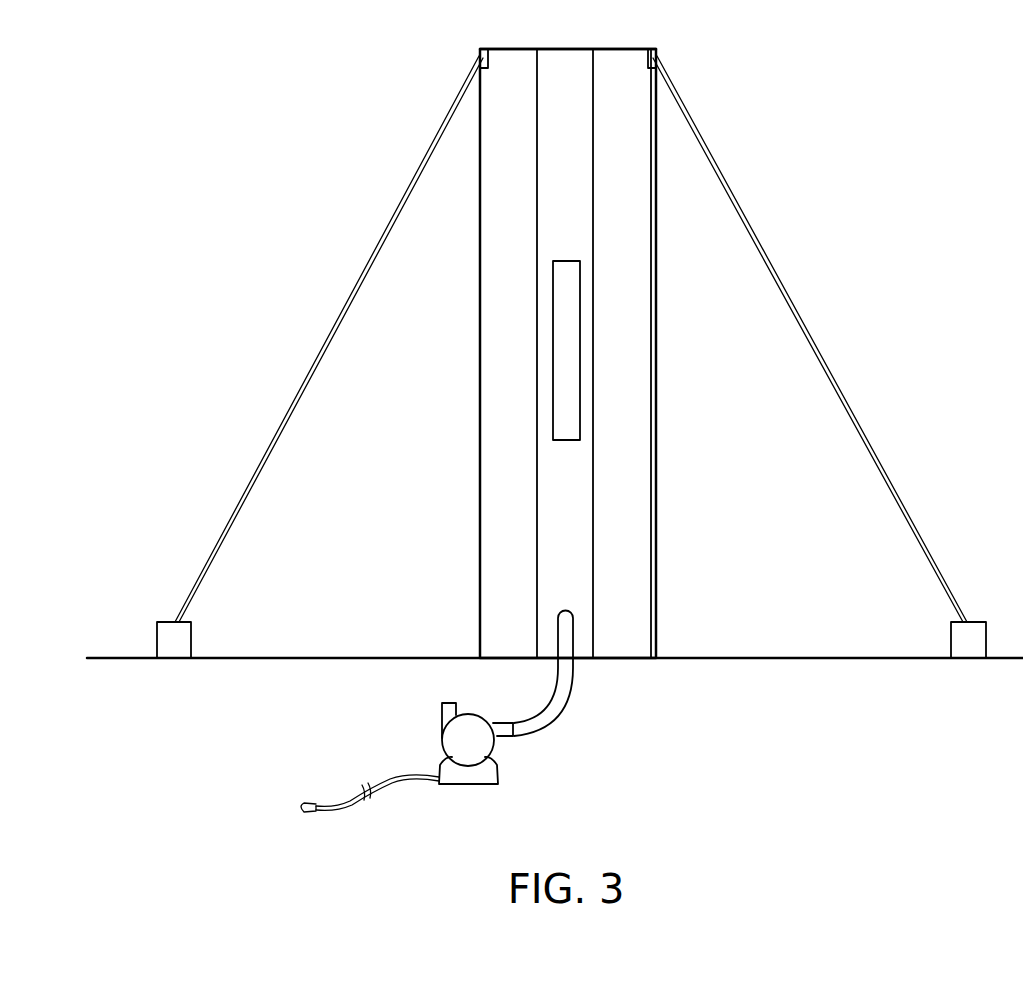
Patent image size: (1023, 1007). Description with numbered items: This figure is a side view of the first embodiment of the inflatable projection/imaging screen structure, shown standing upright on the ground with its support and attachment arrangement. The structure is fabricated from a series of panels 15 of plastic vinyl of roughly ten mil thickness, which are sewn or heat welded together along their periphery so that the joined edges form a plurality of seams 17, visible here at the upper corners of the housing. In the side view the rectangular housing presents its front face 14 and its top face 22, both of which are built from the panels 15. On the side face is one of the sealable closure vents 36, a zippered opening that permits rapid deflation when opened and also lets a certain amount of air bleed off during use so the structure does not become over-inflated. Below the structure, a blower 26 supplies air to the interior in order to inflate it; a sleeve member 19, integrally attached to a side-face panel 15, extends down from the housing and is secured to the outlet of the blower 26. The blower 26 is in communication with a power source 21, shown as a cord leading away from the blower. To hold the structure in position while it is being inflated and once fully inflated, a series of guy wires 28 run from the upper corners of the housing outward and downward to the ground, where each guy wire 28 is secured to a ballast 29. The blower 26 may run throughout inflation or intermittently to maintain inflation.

The front face 14 is at (658, 441).
The panel 15 is at (496, 277).
The seam 17 is at (537, 65).
The sleeve member 19 is at (567, 699).
The power source 21 is at (348, 803).
The top face 22 is at (566, 49).
The blower 26 is at (468, 786).
The guy wire 28 is at (331, 333).
The ballast 29 is at (162, 652).
The sealable closure vent 36 is at (553, 368).